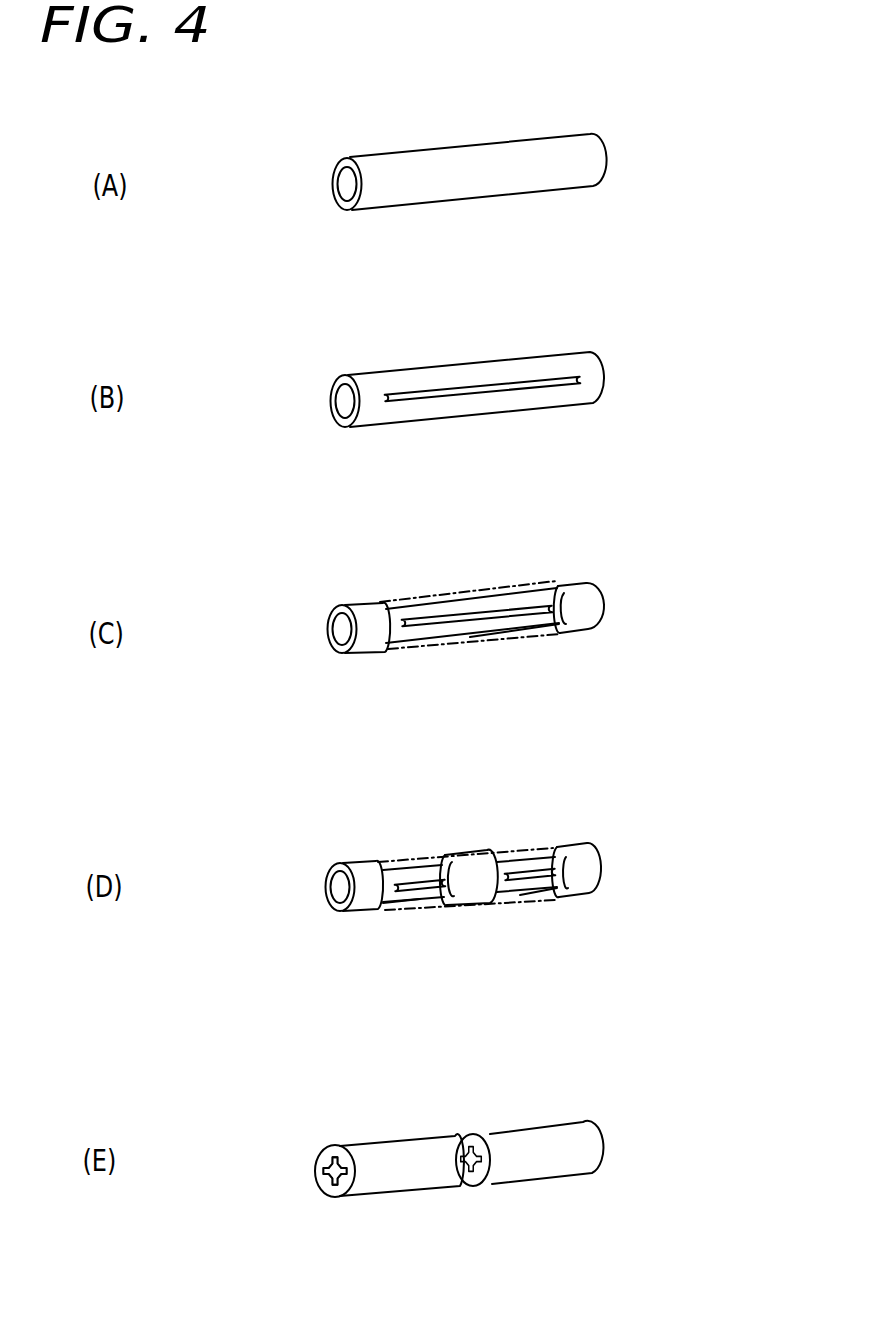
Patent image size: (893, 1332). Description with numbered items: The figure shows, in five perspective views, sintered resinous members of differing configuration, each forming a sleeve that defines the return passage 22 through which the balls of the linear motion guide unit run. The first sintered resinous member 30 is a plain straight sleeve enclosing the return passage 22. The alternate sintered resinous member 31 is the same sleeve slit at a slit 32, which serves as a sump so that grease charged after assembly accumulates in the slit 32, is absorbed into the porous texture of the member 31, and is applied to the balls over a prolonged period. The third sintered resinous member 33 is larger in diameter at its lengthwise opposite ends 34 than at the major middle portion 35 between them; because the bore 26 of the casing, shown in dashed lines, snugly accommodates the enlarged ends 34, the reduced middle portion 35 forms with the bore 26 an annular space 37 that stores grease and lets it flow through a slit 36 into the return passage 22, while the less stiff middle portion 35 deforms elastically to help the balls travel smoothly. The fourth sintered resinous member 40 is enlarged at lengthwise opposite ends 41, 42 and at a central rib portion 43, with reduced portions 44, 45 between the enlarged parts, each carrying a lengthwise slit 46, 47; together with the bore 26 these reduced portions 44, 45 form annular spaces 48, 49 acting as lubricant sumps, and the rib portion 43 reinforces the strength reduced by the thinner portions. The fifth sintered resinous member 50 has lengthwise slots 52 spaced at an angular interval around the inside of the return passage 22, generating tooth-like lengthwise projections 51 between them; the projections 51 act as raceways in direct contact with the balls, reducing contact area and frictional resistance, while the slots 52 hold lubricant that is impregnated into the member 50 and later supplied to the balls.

The return passage 22 is at (322, 1170).
The bore 26 is at (405, 962).
The sintered resinous member 30 is at (537, 92).
The alternate sintered resinous member 31 is at (548, 318).
The slit 32 is at (557, 424).
The sintered resinous member 33 is at (470, 613).
The lengthwise opposite ends 34 is at (587, 595).
The major middle portion 35 is at (452, 609).
The slit 36 is at (484, 667).
The annular space 37 is at (560, 672).
The sintered resinous member 40 is at (469, 868).
The lengthwise opposite end 41 is at (363, 870).
The lengthwise opposite end 42 is at (583, 857).
The central rib portion 43 is at (472, 866).
The reduced portion 44 is at (430, 866).
The reduced portion 45 is at (523, 864).
The lengthwise slit 46 is at (437, 930).
The lengthwise slit 47 is at (533, 932).
The annular space 48 is at (358, 950).
The annular space 49 is at (578, 942).
The sintered resinous member 50 is at (523, 1118).
The lengthwise projections 51 is at (298, 1218).
The lengthwise slots 52 is at (385, 1220).